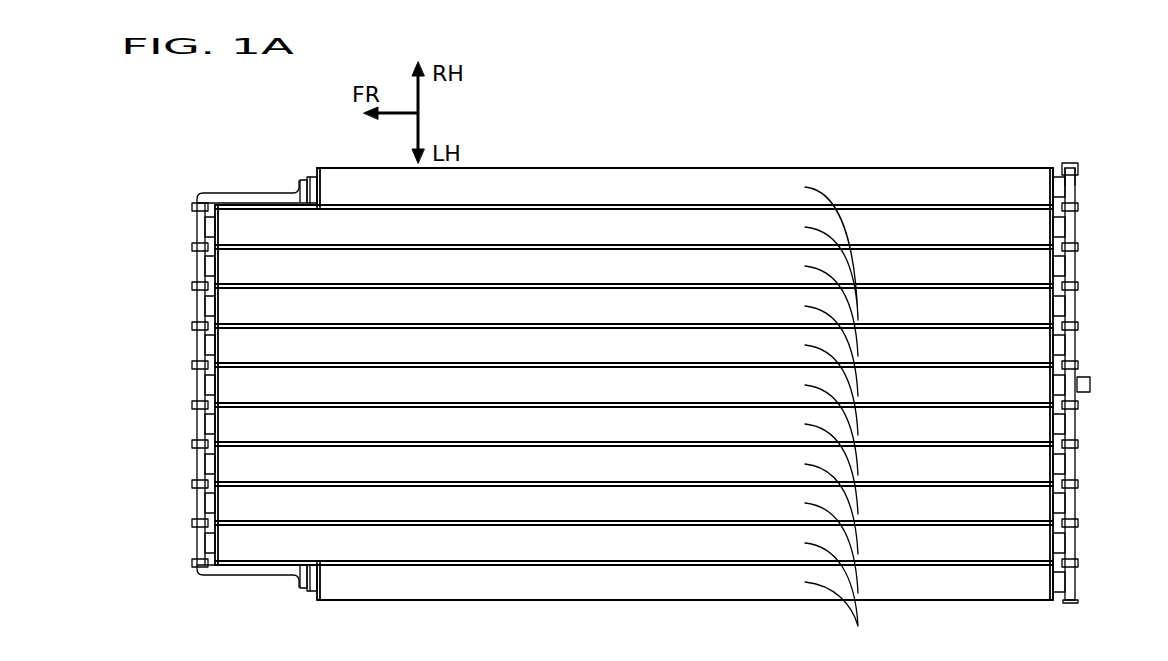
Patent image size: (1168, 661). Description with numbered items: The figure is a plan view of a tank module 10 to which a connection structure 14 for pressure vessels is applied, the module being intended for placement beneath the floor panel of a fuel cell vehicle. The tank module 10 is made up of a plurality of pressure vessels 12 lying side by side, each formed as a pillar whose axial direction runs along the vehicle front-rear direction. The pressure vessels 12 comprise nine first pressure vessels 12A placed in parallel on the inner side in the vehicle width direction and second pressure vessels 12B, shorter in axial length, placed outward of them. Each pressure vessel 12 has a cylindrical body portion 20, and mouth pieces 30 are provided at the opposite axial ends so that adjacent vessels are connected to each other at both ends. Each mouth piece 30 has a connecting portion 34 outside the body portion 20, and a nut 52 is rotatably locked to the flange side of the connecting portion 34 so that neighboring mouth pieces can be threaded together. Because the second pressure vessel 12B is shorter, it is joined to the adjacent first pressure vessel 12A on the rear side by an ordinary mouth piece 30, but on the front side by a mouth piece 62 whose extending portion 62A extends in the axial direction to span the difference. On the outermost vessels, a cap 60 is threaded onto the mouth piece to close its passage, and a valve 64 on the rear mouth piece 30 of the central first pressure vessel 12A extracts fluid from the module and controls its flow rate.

The tank module 10 is at (903, 135).
The pressure vessel 12 is at (634, 385).
The first pressure vessel 12A is at (580, 388).
The second pressure vessel 12B is at (673, 190).
The connection structure 14 is at (823, 152).
The body portion 20 is at (858, 300).
The mouth piece 30 is at (205, 543).
The connecting portion 34 is at (192, 207).
The nut 52 is at (1072, 163).
The cap 60 is at (1078, 603).
The mouth piece having an extending portion 62 is at (308, 177).
The extending portion 62A is at (252, 200).
The valve 64 is at (1091, 385).